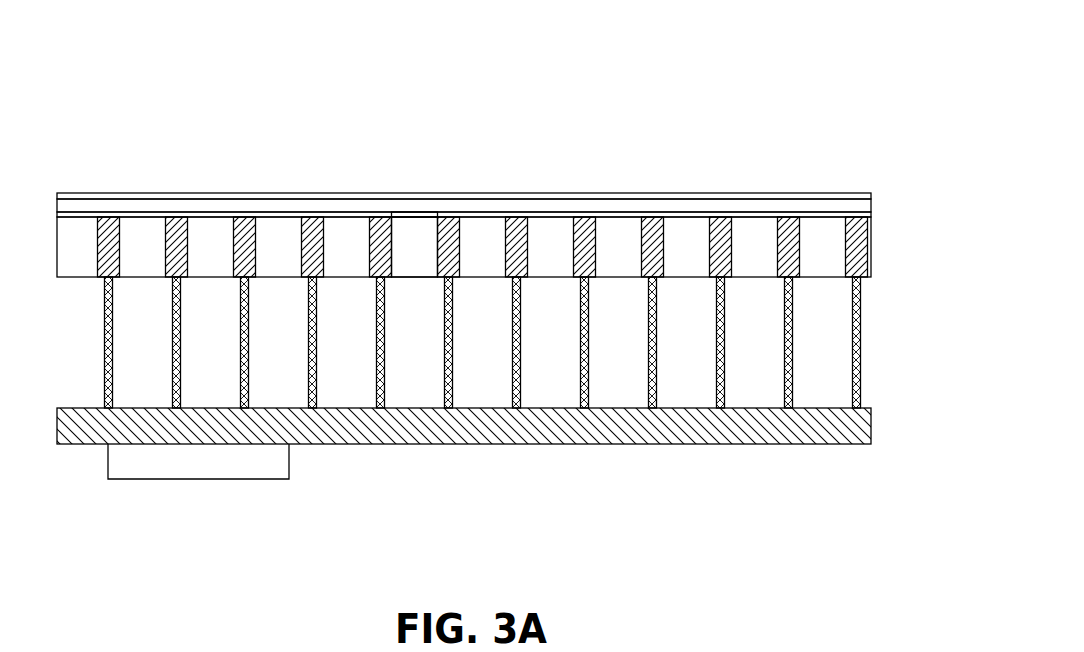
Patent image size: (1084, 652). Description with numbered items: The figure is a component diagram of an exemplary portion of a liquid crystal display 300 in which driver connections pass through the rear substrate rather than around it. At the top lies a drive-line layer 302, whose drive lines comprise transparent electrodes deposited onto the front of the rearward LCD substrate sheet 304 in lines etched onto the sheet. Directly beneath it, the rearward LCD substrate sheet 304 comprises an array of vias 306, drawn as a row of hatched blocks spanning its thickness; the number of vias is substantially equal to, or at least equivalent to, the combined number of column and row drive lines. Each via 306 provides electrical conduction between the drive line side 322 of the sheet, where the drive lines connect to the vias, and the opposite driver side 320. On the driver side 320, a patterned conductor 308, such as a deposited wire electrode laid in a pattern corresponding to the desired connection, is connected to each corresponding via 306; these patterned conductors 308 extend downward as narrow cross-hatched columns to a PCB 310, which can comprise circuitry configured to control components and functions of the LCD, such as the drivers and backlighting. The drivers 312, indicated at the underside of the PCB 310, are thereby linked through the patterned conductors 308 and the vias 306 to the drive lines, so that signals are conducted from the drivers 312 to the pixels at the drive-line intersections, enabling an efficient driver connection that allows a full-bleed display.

The liquid crystal display 300 is at (176, 66).
The drive-line layer 302 is at (871, 194).
The rearward LCD substrate sheet 304 is at (871, 228).
The vias 306 is at (858, 270).
The patterned conductor 308 is at (861, 342).
The PCB 310 is at (871, 425).
The driver 312 is at (289, 479).
The driver side 320 is at (411, 278).
The drive line side 322 is at (406, 216).